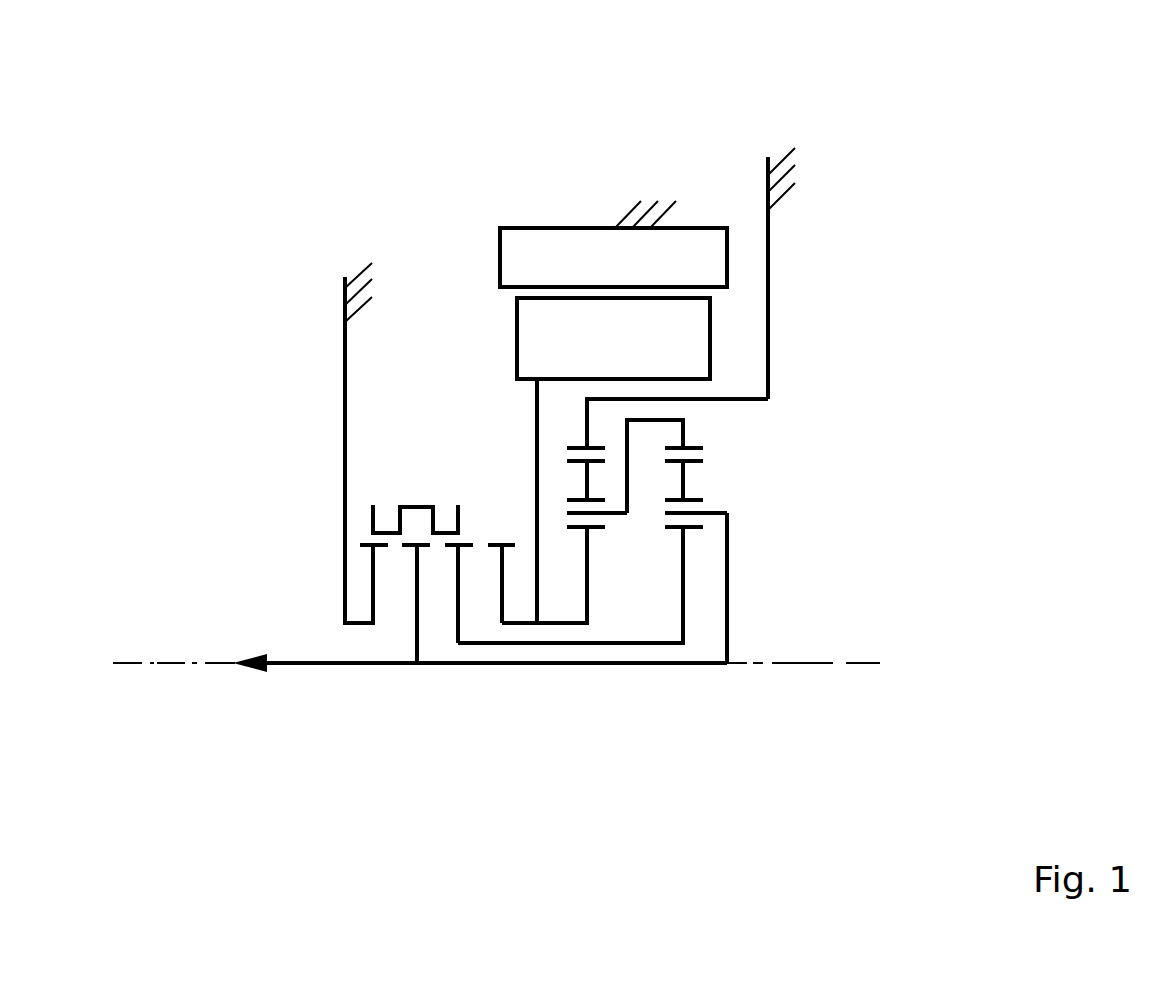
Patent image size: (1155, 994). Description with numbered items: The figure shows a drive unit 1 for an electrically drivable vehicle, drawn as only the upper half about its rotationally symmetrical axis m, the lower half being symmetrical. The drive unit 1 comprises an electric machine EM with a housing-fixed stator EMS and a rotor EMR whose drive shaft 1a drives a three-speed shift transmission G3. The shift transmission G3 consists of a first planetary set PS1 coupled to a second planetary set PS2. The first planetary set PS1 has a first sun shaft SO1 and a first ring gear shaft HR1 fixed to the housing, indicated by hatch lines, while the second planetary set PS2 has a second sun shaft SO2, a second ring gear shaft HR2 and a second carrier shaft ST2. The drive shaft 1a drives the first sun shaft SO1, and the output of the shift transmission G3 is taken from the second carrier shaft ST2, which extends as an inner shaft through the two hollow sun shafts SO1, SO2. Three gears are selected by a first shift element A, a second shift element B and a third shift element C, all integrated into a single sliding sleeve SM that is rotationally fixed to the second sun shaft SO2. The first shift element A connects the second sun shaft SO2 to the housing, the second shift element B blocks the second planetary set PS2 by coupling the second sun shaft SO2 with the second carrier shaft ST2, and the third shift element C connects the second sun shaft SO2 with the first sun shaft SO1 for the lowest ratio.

The drive unit 1 is at (832, 231).
The drive shaft 1a is at (535, 440).
The sliding sleeve SM is at (417, 507).
The electric machine EM is at (599, 210).
The rotor EMR is at (532, 342).
The stator EMS is at (698, 227).
The first ring gear shaft HR1 is at (768, 301).
The second ring gear shaft HR2 is at (683, 434).
The three-speed shift transmission G3 is at (764, 484).
The second carrier shaft ST2 is at (727, 557).
The first sun shaft SO1 is at (548, 623).
The second sun shaft SO2 is at (623, 643).
The first planetary set PS1 is at (586, 683).
The second planetary set PS2 is at (683, 683).
The rotationally symmetrical axis m is at (772, 663).
The first shift element A is at (372, 584).
The second shift element B is at (418, 604).
The third shift element C is at (504, 584).